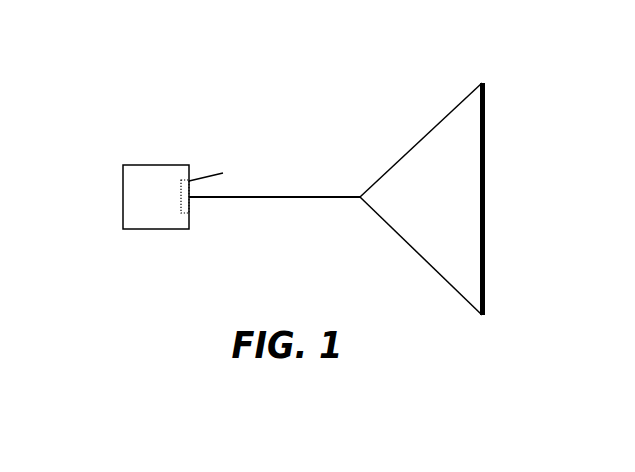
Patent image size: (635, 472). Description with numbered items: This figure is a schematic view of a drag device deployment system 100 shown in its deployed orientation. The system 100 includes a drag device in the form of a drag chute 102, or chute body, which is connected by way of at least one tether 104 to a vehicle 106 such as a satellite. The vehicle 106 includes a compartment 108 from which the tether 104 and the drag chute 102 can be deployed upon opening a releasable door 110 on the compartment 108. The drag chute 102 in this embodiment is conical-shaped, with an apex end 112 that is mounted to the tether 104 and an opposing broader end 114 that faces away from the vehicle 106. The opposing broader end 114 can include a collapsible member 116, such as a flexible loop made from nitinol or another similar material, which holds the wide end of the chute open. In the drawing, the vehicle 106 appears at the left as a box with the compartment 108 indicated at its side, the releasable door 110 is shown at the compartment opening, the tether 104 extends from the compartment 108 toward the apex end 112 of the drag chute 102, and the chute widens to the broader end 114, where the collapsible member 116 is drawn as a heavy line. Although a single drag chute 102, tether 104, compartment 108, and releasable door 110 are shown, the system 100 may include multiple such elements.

The drag device deployment system 100 is at (372, 103).
The drag chute 102 is at (388, 226).
The tether 104 is at (293, 197).
The vehicle 106 is at (140, 229).
The compartment 108 is at (188, 213).
The releasable door 110 is at (207, 177).
The apex end 112 is at (340, 217).
The opposing broader end 114 is at (502, 150).
The collapsible member 116 is at (486, 238).